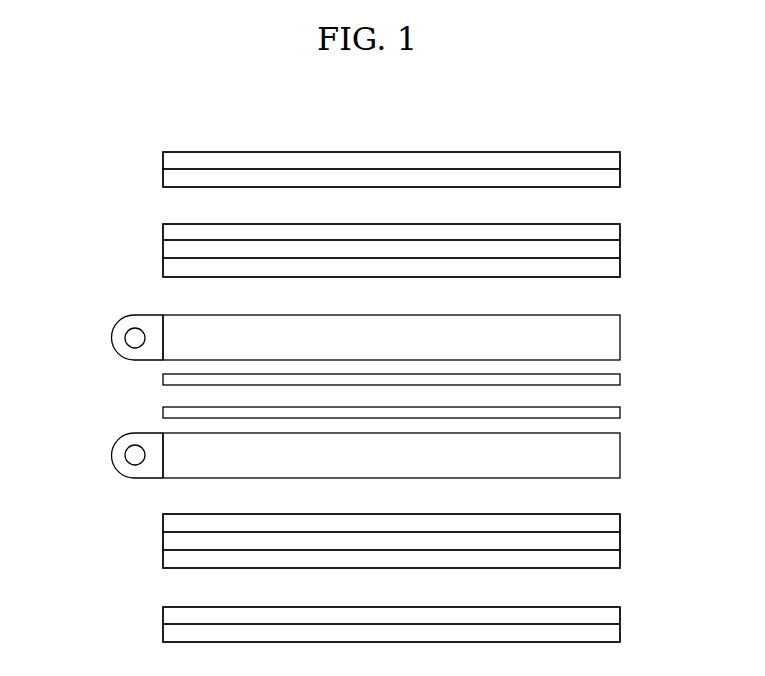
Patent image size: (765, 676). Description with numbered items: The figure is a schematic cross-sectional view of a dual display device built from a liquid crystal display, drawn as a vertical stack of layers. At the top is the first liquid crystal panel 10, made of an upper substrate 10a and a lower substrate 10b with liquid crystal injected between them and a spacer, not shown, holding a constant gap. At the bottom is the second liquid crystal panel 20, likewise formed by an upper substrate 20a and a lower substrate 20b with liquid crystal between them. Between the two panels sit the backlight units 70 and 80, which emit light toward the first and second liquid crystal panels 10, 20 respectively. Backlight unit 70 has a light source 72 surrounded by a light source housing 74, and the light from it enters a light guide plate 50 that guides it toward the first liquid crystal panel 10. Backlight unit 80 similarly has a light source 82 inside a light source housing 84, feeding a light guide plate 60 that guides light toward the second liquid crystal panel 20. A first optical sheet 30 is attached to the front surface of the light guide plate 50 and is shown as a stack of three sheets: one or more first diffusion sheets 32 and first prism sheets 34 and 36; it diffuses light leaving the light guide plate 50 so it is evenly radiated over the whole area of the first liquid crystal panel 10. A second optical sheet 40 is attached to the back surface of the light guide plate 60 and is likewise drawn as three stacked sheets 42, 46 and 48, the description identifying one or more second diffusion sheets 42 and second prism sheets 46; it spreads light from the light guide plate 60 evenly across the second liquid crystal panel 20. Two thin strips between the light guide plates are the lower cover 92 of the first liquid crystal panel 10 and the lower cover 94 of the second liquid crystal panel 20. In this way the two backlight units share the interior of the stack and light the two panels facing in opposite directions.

The first liquid crystal panel 10 is at (659, 153).
The upper substrate 10a is at (621, 160).
The lower substrate 10b is at (621, 178).
The second liquid crystal panel 20 is at (659, 608).
The upper substrate 20a is at (621, 633).
The lower substrate 20b is at (621, 615).
The first optical sheet 30 is at (656, 225).
The first diffusion sheet 32 is at (621, 268).
The first prism sheet 34 is at (621, 252).
The first prism sheet 36 is at (621, 234).
The second optical sheet 40 is at (656, 515).
The second diffusion sheet 42 is at (621, 523).
The second prism sheet 46 is at (621, 542).
The layer 48 is at (621, 561).
The light guide plate 50 is at (621, 338).
The light guide plate 60 is at (621, 455).
The backlight unit 70 is at (108, 349).
The light source 72 is at (126, 333).
The light source housing 74 is at (138, 314).
The backlight unit 80 is at (108, 443).
The light source 82 is at (127, 458).
The light source housing 84 is at (138, 479).
The lower cover 92 is at (621, 380).
The lower cover 94 is at (621, 413).